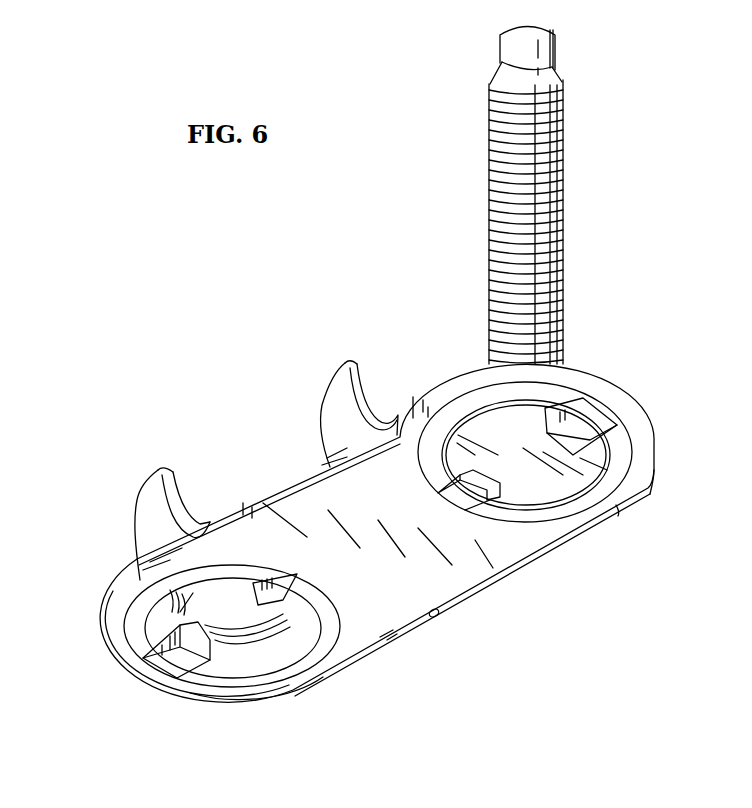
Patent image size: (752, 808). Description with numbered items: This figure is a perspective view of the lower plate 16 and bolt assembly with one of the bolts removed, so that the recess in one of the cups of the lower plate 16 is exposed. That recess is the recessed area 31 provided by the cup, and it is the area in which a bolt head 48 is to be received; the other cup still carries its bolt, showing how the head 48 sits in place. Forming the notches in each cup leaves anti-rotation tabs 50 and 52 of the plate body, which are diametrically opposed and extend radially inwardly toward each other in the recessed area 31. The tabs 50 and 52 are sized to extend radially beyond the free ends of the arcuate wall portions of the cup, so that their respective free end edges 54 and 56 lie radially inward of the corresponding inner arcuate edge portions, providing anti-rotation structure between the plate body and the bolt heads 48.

The lower plate 16 is at (519, 553).
The bolt head 48 is at (486, 435).
The free end edge 56 is at (245, 612).
The free end edge 54 is at (165, 573).
The anti-rotation tab 50 is at (165, 665).
The anti-rotation tab 52 is at (323, 592).
The recessed area 31 is at (225, 667).